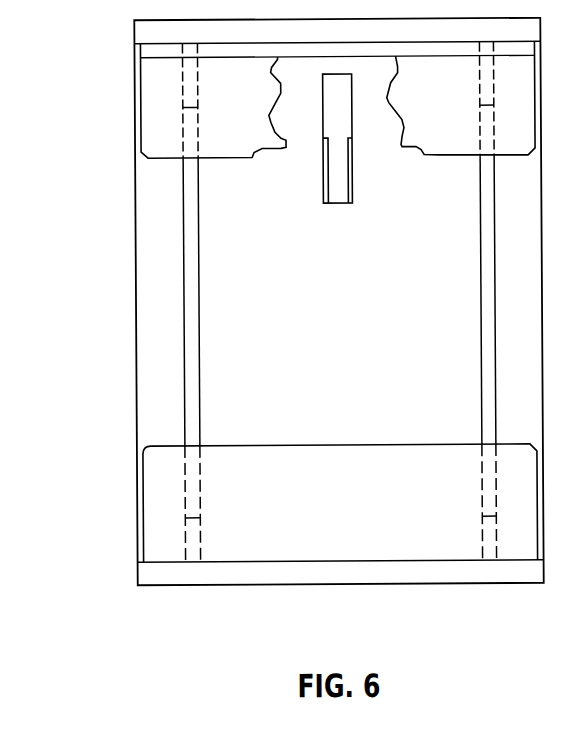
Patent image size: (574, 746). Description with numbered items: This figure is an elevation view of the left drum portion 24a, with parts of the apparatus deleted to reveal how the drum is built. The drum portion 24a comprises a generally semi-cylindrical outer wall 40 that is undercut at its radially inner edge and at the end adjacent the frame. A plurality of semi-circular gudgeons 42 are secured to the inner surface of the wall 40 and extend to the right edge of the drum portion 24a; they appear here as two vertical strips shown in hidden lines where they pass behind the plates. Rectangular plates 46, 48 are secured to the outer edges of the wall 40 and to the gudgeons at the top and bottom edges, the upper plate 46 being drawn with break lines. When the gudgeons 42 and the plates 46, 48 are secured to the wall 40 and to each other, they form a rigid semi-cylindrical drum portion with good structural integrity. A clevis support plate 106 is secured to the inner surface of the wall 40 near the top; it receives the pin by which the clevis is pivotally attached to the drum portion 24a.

The drum portion 24a is at (118, 372).
The outer wall 40 is at (344, 340).
The gudgeons 42 is at (199, 370).
The rectangular plate 46 is at (231, 148).
The rectangular plate 48 is at (345, 506).
The clevis support plate 106 is at (343, 192).